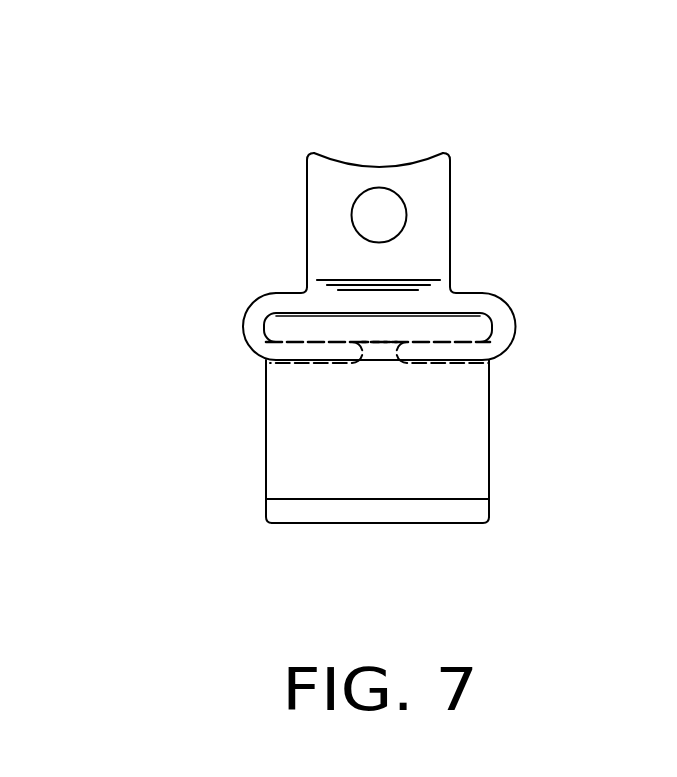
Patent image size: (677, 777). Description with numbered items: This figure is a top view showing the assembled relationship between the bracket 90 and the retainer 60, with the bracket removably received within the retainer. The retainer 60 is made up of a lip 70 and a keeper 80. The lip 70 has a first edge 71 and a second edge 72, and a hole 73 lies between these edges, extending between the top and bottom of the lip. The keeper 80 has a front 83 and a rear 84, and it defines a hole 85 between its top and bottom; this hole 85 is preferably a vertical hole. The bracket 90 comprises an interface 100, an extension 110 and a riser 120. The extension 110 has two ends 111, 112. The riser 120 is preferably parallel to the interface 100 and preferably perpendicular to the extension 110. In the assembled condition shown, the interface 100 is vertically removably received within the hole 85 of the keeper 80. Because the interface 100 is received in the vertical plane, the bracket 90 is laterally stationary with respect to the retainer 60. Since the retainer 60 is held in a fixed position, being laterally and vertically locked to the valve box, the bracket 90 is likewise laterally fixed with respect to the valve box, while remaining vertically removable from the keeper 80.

The retainer 60 is at (481, 195).
The lip 70 is at (450, 170).
The first edge 71 is at (338, 157).
The second edge 72 is at (303, 290).
The hole 73 is at (394, 198).
The keeper 80 is at (515, 339).
The front 83 is at (310, 365).
The rear 84 is at (253, 298).
The hole 85 is at (253, 327).
The bracket 90 is at (523, 480).
The interface 100 is at (460, 325).
The extension 110 is at (490, 427).
The end 111 is at (378, 342).
The end 112 is at (290, 497).
The riser 120 is at (367, 525).